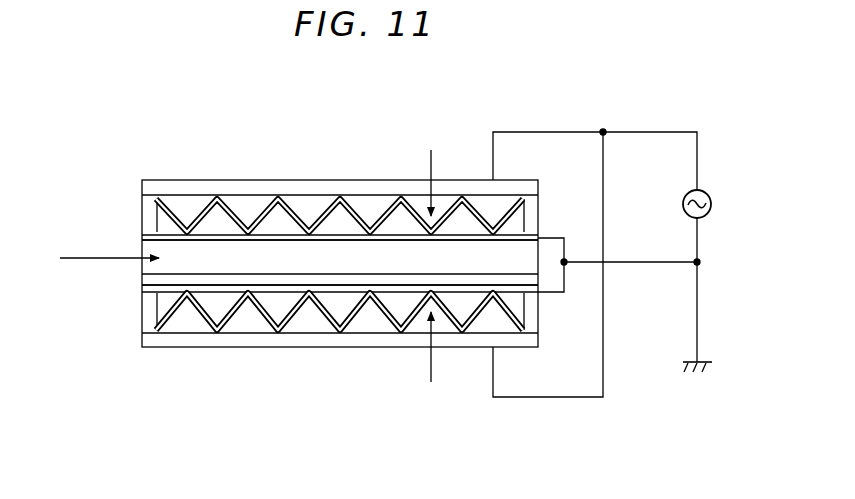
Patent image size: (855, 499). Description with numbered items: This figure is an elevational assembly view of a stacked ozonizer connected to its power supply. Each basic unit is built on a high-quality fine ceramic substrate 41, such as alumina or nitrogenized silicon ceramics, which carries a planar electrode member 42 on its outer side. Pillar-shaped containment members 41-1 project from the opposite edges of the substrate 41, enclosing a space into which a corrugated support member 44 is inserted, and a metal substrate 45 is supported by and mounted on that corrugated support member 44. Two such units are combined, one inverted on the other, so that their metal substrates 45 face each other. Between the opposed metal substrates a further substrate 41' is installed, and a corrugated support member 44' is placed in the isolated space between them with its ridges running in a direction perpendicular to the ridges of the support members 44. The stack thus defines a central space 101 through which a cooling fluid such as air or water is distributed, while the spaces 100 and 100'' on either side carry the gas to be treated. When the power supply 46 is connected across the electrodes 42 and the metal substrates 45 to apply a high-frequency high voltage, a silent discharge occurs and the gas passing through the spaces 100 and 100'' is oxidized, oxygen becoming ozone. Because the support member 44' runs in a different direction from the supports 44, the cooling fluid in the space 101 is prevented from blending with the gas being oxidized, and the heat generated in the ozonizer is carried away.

The pillar-shaped containment members 41-1 is at (148, 218).
The planar electrode member 42 is at (200, 180).
The metal substrate 45 is at (150, 235).
The substrate 41 is at (340, 268).
The corrugated support member 44 is at (339, 272).
The corrugated support member 44' is at (309, 246).
The substrate 41' is at (296, 286).
The space 101 is at (93, 260).
The space 100'' is at (442, 171).
The space 100 is at (432, 359).
The power supply 46 is at (705, 191).